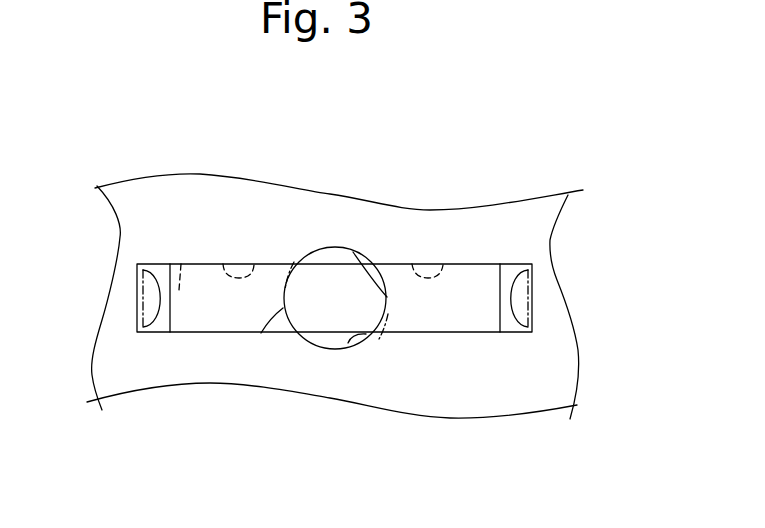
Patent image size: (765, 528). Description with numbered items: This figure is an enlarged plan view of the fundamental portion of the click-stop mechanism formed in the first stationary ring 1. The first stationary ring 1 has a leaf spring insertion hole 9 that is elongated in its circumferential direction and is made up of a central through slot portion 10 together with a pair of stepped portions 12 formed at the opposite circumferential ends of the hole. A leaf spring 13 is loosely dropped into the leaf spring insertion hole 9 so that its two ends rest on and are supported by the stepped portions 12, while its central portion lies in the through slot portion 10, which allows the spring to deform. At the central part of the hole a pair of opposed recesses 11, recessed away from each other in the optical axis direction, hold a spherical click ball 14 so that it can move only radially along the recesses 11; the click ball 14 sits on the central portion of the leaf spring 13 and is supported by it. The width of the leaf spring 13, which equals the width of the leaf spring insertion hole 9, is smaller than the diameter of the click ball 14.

The first stationary ring 1 is at (362, 222).
The leaf spring insertion hole 9 is at (444, 263).
The through slot portion 10 is at (223, 262).
The pair of opposed recesses 11 is at (387, 297).
The pair of stepped portions 12 is at (148, 296).
The leaf spring 13 is at (537, 312).
The click ball 14 is at (283, 297).